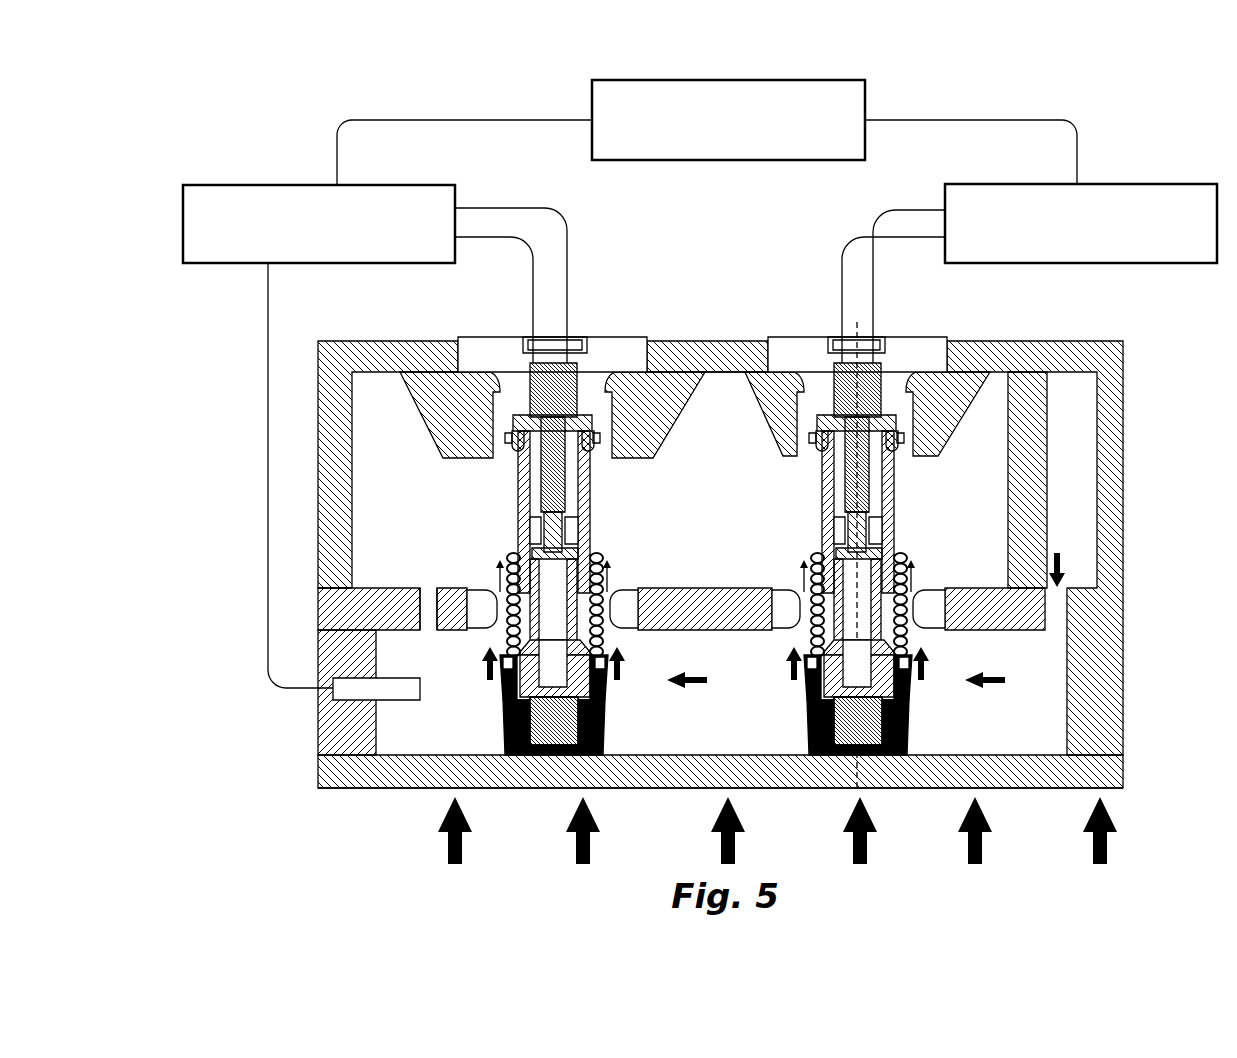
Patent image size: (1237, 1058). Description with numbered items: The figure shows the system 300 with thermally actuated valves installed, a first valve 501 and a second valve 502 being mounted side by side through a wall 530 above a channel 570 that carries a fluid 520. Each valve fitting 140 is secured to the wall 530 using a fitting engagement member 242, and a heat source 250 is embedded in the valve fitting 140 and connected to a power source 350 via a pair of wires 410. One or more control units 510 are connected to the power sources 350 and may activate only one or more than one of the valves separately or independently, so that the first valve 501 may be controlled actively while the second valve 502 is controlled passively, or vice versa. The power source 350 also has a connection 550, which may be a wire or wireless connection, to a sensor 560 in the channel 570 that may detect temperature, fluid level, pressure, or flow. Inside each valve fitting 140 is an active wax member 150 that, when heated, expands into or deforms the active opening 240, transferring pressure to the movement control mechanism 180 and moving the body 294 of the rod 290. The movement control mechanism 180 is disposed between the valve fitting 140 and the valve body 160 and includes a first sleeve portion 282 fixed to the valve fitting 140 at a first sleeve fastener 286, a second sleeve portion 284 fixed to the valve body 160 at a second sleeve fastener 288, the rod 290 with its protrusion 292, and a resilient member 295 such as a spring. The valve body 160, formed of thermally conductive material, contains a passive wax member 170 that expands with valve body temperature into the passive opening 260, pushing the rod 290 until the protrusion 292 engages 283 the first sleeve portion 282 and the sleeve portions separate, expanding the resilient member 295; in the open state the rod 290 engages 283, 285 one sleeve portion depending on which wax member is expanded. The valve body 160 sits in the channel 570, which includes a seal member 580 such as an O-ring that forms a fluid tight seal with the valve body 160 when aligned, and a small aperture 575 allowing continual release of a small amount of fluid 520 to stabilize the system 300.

The system 300 is at (188, 96).
The control unit 510 is at (711, 129).
The power source 350 is at (303, 235).
The pair of wires 410 is at (535, 230).
The first valve 501 is at (583, 327).
The second valve 502 is at (812, 335).
The wall 530 is at (733, 343).
The valve fitting 140 is at (492, 345).
The active wax member 150 is at (528, 362).
The heat source 250 is at (573, 335).
The fitting engagement member 242 is at (443, 372).
The active opening 240 is at (583, 453).
The movement control mechanism 180 is at (500, 520).
The first sleeve fastener 286 is at (522, 437).
The first sleeve portion 282 is at (577, 483).
The rod 290 is at (557, 518).
The engagement 285 is at (545, 557).
The engagement 283 is at (870, 512).
The protrusion 292 is at (572, 542).
The body 294 is at (533, 573).
The resilient member 295 is at (603, 600).
The second sleeve portion 284 is at (600, 640).
The second sleeve fastener 288 is at (507, 657).
The passive opening 260 is at (507, 713).
The passive wax member 170 is at (607, 707).
The valve body 160 is at (607, 731).
The seal member 580 is at (487, 603).
The small aperture 575 is at (430, 623).
The sensor 560 is at (345, 692).
The connection 550 is at (272, 475).
The fluid 520 is at (1028, 713).
The channel 570 is at (767, 740).